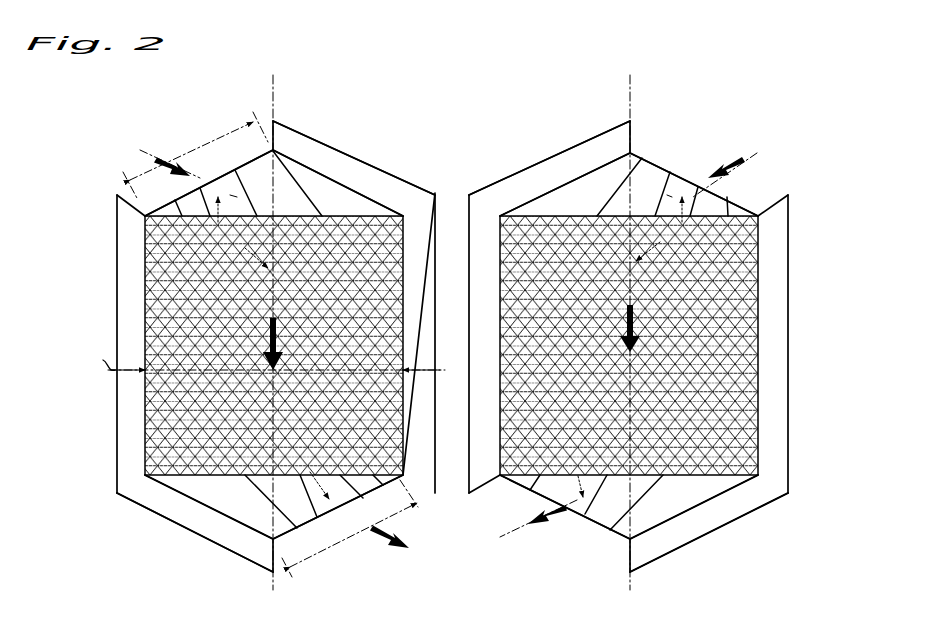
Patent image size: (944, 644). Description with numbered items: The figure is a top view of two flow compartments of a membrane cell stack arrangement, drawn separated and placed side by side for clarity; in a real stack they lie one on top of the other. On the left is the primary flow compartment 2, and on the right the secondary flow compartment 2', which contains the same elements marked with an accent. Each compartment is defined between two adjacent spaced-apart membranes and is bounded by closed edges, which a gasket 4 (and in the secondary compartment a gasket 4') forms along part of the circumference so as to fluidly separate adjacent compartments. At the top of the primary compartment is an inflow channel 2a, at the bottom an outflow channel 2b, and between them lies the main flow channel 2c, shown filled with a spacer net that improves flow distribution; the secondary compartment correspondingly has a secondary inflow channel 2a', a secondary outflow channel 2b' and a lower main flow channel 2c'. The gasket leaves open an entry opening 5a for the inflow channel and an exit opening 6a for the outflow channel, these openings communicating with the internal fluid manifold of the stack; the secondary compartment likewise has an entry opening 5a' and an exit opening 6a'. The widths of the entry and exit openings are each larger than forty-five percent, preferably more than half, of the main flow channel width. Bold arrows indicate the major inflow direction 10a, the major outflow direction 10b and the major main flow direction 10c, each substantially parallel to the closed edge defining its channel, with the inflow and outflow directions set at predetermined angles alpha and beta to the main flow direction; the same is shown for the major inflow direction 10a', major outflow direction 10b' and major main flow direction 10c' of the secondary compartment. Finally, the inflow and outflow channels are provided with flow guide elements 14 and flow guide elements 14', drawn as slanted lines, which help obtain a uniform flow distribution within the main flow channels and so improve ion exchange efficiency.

The flow compartment 2 is at (245, 347).
The inflow channel 2a is at (354, 161).
The outflow channel 2b is at (359, 507).
The main flow channel 2c is at (235, 345).
The gasket 4 is at (257, 334).
The entry opening 5a is at (209, 183).
The exit opening 6a is at (229, 530).
The major inflow direction 10a is at (160, 149).
The major outflow direction 10b is at (378, 573).
The major main flow direction 10c is at (169, 342).
The flow guide elements 14 is at (285, 346).
The secondary flow compartment 2' is at (670, 337).
The secondary inflow channel 2a' is at (549, 150).
The secondary outflow channel 2b' is at (552, 507).
The lower main flow channel 2c' is at (678, 345).
The gasket 4' is at (664, 332).
The entry opening 5a' is at (704, 184).
The exit opening 6a' is at (690, 537).
The major inflow direction 10a' is at (727, 152).
The major outflow direction 10b' is at (543, 534).
The major main flow direction 10c' is at (745, 321).
The flow guide elements 14' is at (644, 342).